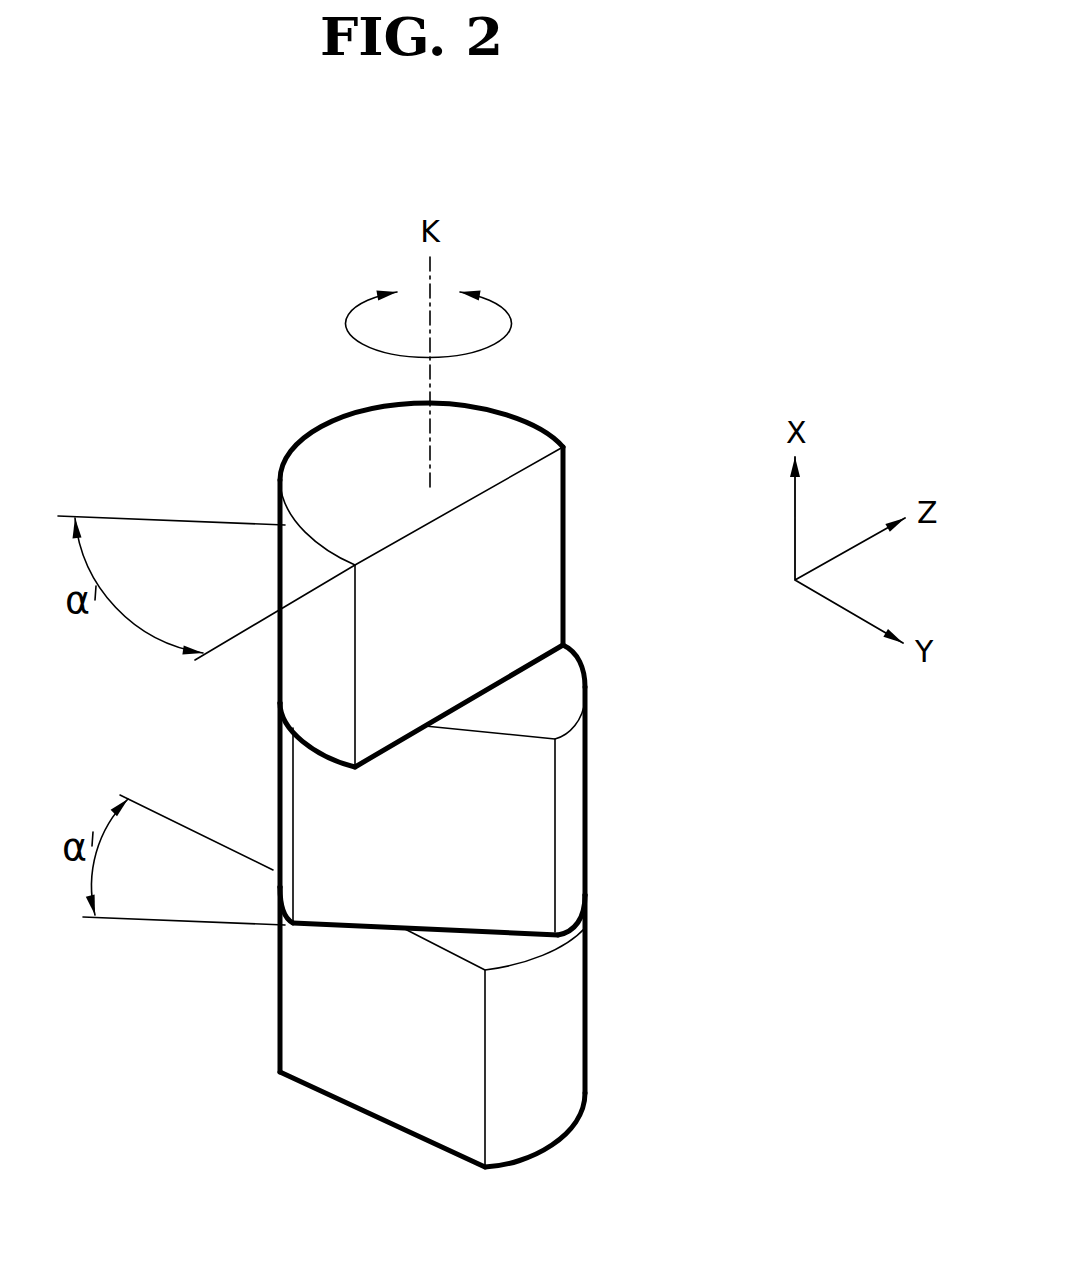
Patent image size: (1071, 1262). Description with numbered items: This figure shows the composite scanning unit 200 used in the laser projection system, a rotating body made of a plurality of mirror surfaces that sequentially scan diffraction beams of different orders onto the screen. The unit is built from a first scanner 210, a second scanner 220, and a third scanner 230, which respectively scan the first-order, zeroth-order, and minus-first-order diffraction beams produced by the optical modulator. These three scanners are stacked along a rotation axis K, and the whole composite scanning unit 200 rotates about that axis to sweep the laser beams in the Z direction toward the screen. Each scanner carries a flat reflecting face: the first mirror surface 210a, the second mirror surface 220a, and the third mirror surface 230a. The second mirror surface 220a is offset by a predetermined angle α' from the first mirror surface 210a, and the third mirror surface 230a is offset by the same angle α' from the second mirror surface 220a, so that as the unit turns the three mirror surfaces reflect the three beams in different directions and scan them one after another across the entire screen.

The composite scanning unit 200 is at (588, 312).
The first scanner 210 is at (495, 447).
The first mirror surface 210a is at (538, 555).
The second scanner 220 is at (590, 783).
The second mirror surface 220a is at (498, 840).
The third scanner 230 is at (570, 1003).
The third mirror surface 230a is at (333, 1070).